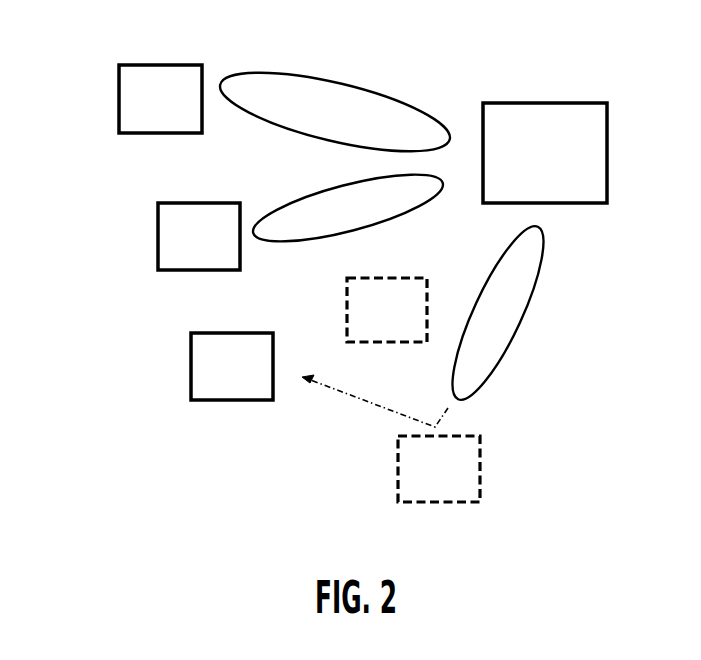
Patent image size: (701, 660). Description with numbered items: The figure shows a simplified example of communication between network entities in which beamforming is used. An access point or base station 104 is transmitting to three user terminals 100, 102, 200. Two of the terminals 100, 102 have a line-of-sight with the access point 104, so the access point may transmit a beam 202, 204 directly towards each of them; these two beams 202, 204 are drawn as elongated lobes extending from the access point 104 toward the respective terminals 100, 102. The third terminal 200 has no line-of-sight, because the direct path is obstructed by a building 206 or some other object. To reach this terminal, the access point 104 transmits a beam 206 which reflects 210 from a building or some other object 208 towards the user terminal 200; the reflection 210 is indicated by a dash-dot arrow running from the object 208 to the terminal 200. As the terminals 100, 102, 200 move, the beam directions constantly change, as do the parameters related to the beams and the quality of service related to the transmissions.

The user terminal 100 is at (128, 64).
The user terminal 102 is at (167, 203).
The access point or base station 104 is at (537, 103).
The user terminal 200 is at (200, 333).
The beam 202 is at (337, 87).
The beam 204 is at (320, 193).
The building / beam 206 is at (348, 308).
The building or other object 208 is at (480, 472).
The reflection 210 is at (353, 395).